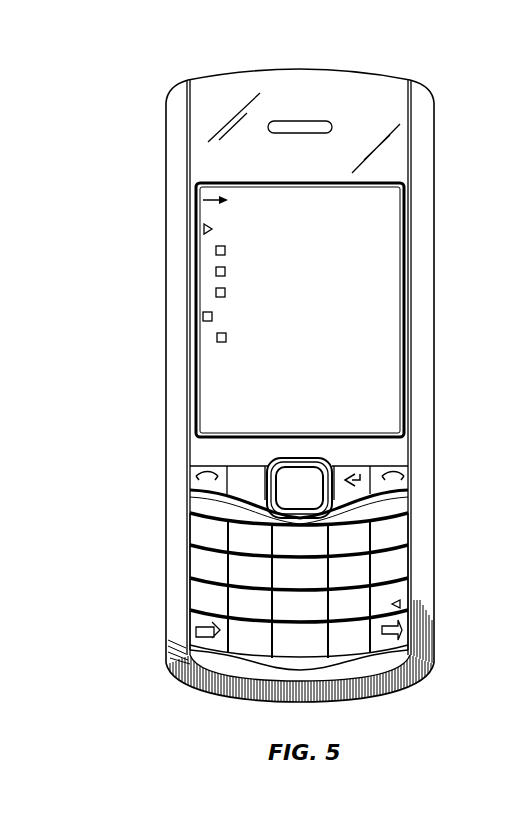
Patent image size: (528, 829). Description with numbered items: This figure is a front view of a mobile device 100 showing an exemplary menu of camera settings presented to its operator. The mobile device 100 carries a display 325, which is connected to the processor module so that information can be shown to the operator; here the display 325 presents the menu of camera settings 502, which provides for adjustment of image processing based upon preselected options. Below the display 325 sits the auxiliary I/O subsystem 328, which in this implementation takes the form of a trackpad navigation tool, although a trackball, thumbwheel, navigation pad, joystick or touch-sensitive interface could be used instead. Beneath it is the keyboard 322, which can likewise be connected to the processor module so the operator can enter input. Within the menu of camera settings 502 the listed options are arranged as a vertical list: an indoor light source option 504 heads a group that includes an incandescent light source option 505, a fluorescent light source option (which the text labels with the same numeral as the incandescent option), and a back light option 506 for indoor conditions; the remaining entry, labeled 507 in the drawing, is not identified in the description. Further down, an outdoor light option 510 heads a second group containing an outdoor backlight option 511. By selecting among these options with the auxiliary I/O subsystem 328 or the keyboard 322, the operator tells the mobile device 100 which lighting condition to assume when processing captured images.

The mobile device 100 is at (133, 66).
The keyboard 322 is at (392, 662).
The display 325 is at (360, 330).
The auxiliary I/O subsystem 328 is at (300, 473).
The menu of camera settings 502 is at (207, 200).
The indoor light source option 504 is at (203, 229).
The incandescent light source option 505 is at (205, 250).
The back light option 506 is at (205, 272).
The indoor back light option 507 is at (205, 293).
The outdoor light option 510 is at (203, 316).
The outdoor backlight option 511 is at (205, 338).